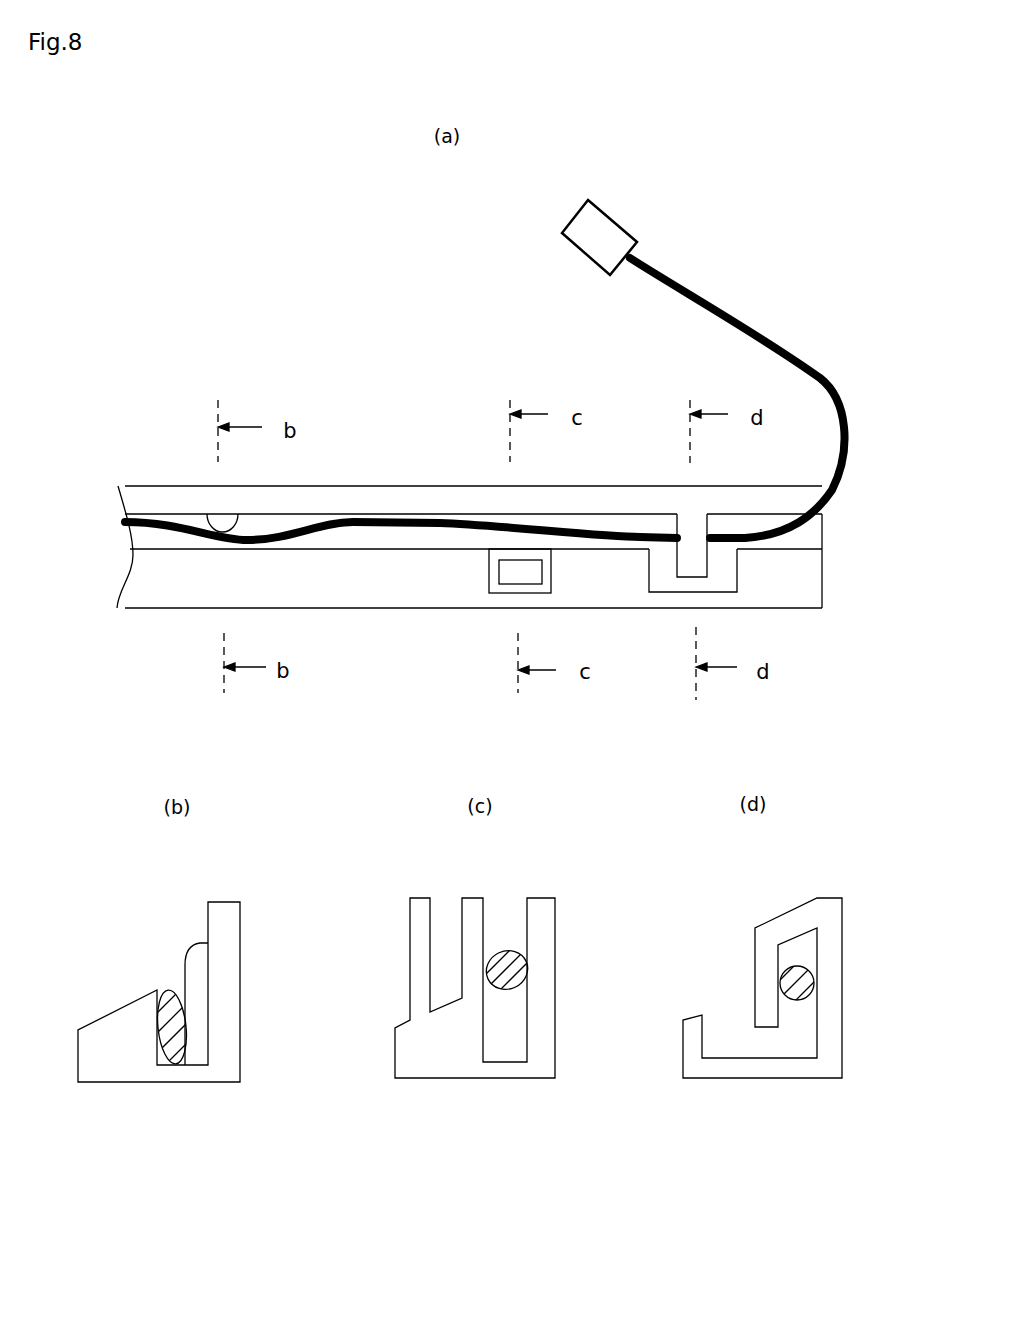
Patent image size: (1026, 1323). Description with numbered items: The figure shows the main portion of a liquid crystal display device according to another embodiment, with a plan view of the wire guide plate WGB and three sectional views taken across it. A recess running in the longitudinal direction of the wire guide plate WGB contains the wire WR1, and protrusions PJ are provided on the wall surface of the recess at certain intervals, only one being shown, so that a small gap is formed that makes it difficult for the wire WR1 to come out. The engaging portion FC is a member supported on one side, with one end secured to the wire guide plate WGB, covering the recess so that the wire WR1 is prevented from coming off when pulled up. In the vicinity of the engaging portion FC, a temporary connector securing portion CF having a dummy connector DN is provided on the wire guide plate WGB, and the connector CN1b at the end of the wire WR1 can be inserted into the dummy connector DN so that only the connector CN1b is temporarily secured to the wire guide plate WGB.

The wire guide plate WGB is at (155, 625).
The protrusion PJ is at (222, 524).
The temporary connector securing portion CF is at (513, 585).
The dummy connector DN is at (525, 582).
The engaging portion FC is at (693, 547).
The wire WR1 is at (733, 310).
The connector CN1b is at (595, 232).